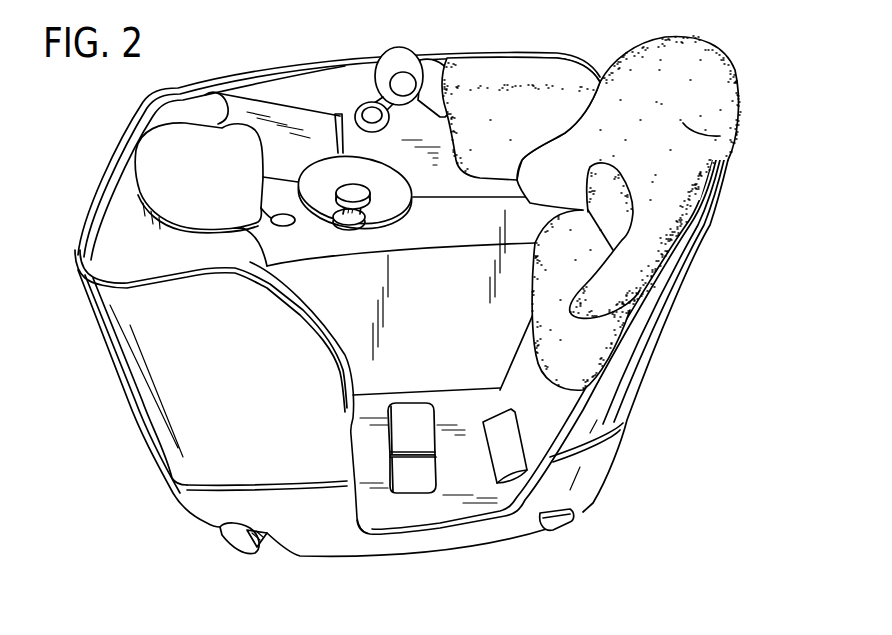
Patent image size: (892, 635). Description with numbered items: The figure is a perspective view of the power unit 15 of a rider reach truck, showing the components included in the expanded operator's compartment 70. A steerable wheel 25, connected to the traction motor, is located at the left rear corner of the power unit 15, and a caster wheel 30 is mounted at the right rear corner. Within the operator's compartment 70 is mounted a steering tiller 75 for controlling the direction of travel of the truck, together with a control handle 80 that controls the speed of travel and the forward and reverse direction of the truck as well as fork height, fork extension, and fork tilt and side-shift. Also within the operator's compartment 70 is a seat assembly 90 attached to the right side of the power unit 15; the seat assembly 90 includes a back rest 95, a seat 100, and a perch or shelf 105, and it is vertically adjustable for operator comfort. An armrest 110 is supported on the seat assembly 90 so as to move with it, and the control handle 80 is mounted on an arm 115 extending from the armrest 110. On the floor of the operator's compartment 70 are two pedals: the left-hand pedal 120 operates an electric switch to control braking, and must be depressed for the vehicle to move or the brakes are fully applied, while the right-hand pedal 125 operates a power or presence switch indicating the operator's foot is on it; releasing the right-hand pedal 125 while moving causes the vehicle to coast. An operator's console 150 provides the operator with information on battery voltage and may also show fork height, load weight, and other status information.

The power unit 15 is at (120, 418).
The steerable wheel 25 is at (227, 540).
The caster wheel 30 is at (565, 523).
The operator's compartment 70 is at (485, 377).
The steering tiller 75 is at (387, 212).
The control handle 80 is at (385, 100).
The seat assembly 90 is at (721, 40).
The back rest 95 is at (685, 124).
The seat 100 is at (577, 343).
The perch or shelf 105 is at (622, 216).
The armrest 110 is at (516, 67).
The arm 115 is at (432, 62).
The left-hand pedal 120 is at (420, 478).
The right-hand pedal 125 is at (400, 435).
The operator's console 150 is at (155, 160).